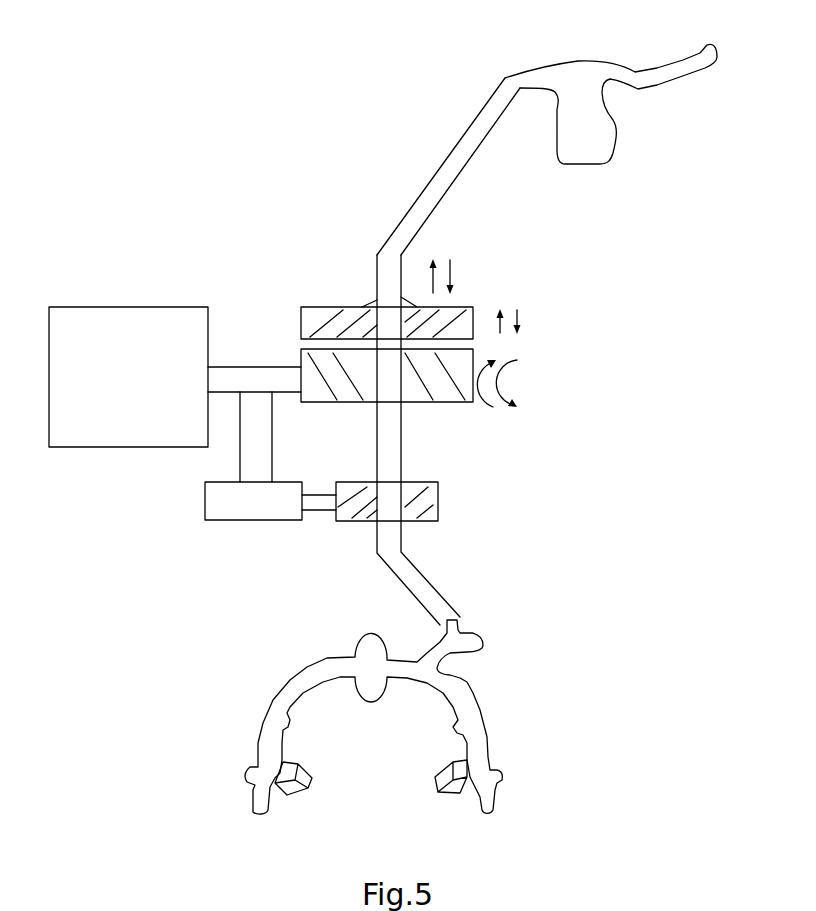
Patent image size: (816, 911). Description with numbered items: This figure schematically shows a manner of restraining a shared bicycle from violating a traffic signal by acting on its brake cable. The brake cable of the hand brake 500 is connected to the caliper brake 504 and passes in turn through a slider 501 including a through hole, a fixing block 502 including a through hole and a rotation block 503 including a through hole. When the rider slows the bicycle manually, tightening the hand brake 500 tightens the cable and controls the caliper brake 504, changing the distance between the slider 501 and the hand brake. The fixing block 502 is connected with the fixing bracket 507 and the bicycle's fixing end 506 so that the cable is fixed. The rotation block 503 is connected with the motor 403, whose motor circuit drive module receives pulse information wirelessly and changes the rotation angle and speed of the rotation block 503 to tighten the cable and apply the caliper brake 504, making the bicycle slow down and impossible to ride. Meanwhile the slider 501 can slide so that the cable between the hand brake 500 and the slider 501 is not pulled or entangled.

The hand brake 500 is at (668, 63).
The slider 501 is at (460, 307).
The fixing block 502 is at (432, 402).
The rotation block 503 is at (420, 483).
The caliper brake 504 is at (467, 682).
The bicycle's fixing end 506 is at (138, 278).
The fixing bracket 507 is at (248, 367).
The motor 403 is at (243, 522).